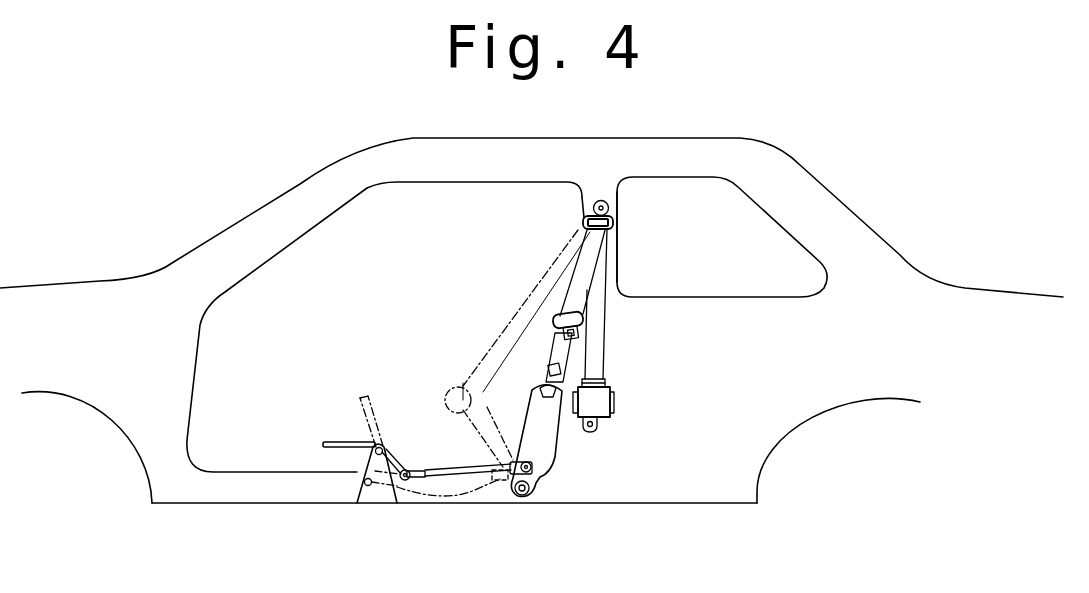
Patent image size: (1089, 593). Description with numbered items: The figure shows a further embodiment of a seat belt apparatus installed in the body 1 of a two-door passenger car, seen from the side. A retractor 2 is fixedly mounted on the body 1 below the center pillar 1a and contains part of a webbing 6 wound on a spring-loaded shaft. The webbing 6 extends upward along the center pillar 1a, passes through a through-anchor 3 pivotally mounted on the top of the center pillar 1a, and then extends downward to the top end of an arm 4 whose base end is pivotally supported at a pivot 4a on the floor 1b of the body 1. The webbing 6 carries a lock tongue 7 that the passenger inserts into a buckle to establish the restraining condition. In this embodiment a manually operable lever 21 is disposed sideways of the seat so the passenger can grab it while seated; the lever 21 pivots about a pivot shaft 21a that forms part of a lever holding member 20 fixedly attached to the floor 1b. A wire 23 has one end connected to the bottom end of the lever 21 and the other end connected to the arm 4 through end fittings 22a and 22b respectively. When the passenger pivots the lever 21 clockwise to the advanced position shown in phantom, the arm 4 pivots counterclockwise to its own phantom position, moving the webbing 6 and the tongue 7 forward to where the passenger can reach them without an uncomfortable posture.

The body 1 is at (285, 186).
The center pillar 1a is at (616, 252).
The floor 1b is at (315, 505).
The retractor 2 is at (595, 400).
The through-anchor 3 is at (610, 210).
The arm 4 is at (537, 435).
The arm pivot 4a is at (523, 497).
The webbing 6 is at (581, 287).
The lock tongue 7 is at (572, 338).
The lever holding member 20 is at (382, 498).
The manually operable lever 21 is at (335, 442).
The pivot shaft 21a is at (380, 445).
The end fitting 22a is at (413, 470).
The end fitting 22b is at (540, 470).
The wire 23 is at (452, 466).